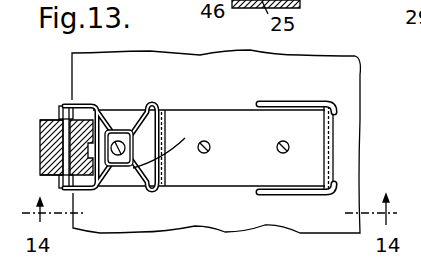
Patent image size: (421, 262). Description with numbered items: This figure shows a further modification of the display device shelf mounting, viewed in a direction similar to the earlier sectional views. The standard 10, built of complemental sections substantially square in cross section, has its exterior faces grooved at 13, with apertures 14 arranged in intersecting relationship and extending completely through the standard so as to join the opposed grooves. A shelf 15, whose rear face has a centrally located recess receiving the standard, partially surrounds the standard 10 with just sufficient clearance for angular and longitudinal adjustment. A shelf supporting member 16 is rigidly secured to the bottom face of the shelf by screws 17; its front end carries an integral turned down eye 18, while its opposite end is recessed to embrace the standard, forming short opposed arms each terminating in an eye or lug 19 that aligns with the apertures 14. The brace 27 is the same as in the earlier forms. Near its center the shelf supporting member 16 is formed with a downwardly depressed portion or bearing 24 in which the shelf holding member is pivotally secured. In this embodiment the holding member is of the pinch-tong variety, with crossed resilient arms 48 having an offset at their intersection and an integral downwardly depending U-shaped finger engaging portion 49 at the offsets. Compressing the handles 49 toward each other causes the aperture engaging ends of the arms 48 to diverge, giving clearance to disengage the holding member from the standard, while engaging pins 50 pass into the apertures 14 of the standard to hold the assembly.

The standard 10 is at (40, 163).
The grooves 13 is at (40, 141).
The apertures 14 is at (62, 130).
The shelf 15 is at (347, 100).
The shelf supporting member 16 is at (223, 174).
The screws 17 is at (275, 147).
The turned down eye 18 is at (330, 149).
The eye or lug 19 is at (64, 190).
The depressed portion or bearing 24 is at (162, 118).
The brace 27 is at (283, 194).
The resilient arms 48 is at (99, 187).
The finger engaging portion 49 is at (124, 132).
The engaging pins 50 is at (60, 175).